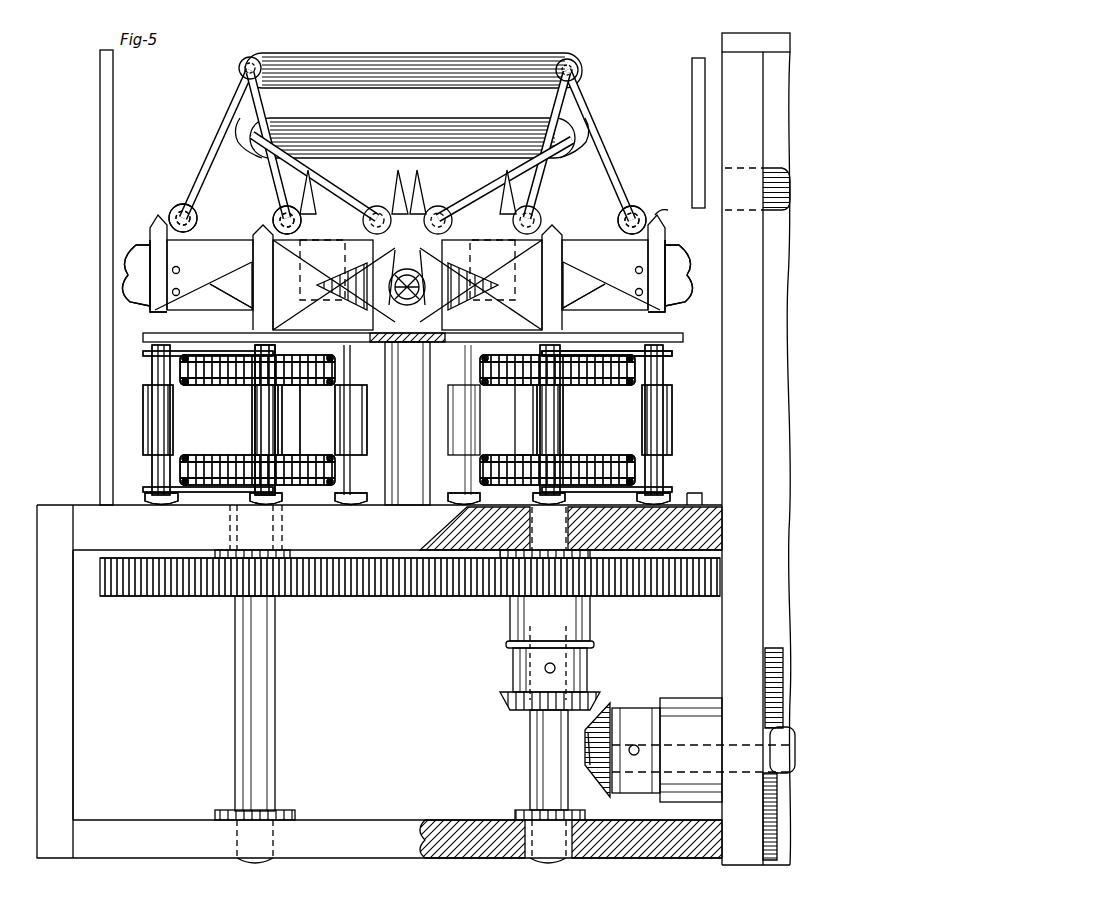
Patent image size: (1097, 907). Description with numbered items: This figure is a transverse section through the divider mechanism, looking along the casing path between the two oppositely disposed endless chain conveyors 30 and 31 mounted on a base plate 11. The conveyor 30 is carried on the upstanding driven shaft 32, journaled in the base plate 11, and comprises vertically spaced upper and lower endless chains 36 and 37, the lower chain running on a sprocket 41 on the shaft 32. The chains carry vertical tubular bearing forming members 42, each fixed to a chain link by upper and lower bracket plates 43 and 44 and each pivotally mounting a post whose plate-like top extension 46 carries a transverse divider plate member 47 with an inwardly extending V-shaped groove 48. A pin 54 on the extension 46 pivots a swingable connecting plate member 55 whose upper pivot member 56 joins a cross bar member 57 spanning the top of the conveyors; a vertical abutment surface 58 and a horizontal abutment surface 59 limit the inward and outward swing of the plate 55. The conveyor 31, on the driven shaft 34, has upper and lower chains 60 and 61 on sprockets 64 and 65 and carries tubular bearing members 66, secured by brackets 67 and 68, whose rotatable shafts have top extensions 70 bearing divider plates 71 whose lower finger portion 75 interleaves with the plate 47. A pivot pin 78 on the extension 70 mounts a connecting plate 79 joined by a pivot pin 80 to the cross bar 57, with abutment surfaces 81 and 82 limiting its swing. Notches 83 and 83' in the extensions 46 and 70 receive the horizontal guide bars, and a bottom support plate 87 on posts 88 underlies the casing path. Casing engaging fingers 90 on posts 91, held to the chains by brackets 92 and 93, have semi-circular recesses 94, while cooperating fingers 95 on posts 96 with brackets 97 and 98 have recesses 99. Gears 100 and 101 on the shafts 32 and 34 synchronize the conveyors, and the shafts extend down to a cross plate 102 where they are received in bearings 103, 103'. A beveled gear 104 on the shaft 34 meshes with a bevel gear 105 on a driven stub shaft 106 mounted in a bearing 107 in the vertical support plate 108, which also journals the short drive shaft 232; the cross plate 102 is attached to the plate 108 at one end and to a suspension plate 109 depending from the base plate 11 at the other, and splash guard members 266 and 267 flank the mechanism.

The base plate 11 is at (93, 505).
The endless chain conveyor 30 is at (124, 447).
The endless chain conveyor 31 is at (684, 441).
The upstanding shaft 32 is at (233, 496).
The shaft 34 is at (533, 752).
The upper endless chain 36 is at (202, 358).
The lower endless chain 37 is at (198, 462).
The sprocket 41 is at (240, 465).
The tubular bearing forming member 42 is at (146, 414).
The upper bracket plate 43 is at (256, 350).
The lower bracket plate 44 is at (243, 383).
The upstanding top extension 46 is at (150, 225).
The divider plate member 47 is at (232, 245).
The V-shaped groove 48 is at (232, 298).
The pin 54 is at (180, 205).
The swingable connecting plate member 55 is at (243, 108).
The pivot member 56 is at (240, 64).
The cross bar member 57 is at (385, 80).
The vertical abutment surface 58 is at (410, 180).
The horizontal abutment surface 59 is at (168, 215).
The upper chain 60 is at (593, 358).
The lower chain 61 is at (600, 500).
The sprocket 64 is at (604, 388).
The sprocket 65 is at (618, 460).
The tubular bearing forming member 66 is at (672, 396).
The bracket 67 is at (528, 385).
The bracket 68 is at (540, 505).
The plate-like top extension 70 is at (666, 232).
The divider plate 71 is at (466, 244).
The lower finger portion 75 is at (575, 310).
The pivot pin 78 is at (640, 210).
The rectangular connecting plate 79 is at (618, 135).
The pivot pin 80 is at (580, 68).
The vertical abutment surface 81 is at (432, 190).
The horizontal abutment surface 82 is at (656, 214).
The notch 83 is at (205, 275).
The notch 83' is at (606, 275).
The bottom support plate 87 is at (378, 330).
The posts 88 is at (398, 505).
The casing engaging finger 90 is at (146, 256).
The post member 91 is at (160, 372).
The bracket member 92 is at (150, 352).
The bracket member 93 is at (150, 490).
The semi-circular recess 94 is at (125, 290).
The casing engaging finger 95 is at (696, 272).
The post 96 is at (667, 413).
The bracket 97 is at (664, 352).
The bracket 98 is at (662, 488).
The semi-circular recess 99 is at (683, 287).
The gear 100 is at (182, 596).
The gear 101 is at (442, 590).
The cross plate 102 is at (405, 825).
The bearing 103 is at (559, 874).
The bearing 103' is at (247, 874).
The beveled gear 104 is at (508, 702).
The bevel gear 105 is at (625, 690).
The driven stub shaft 106 is at (690, 708).
The bearing 107 is at (636, 708).
The support plate 108 is at (722, 614).
The suspension plate 109 is at (68, 697).
The drive shaft 232 is at (772, 168).
The splash guard member 266 is at (692, 65).
The splash guard member 267 is at (100, 100).